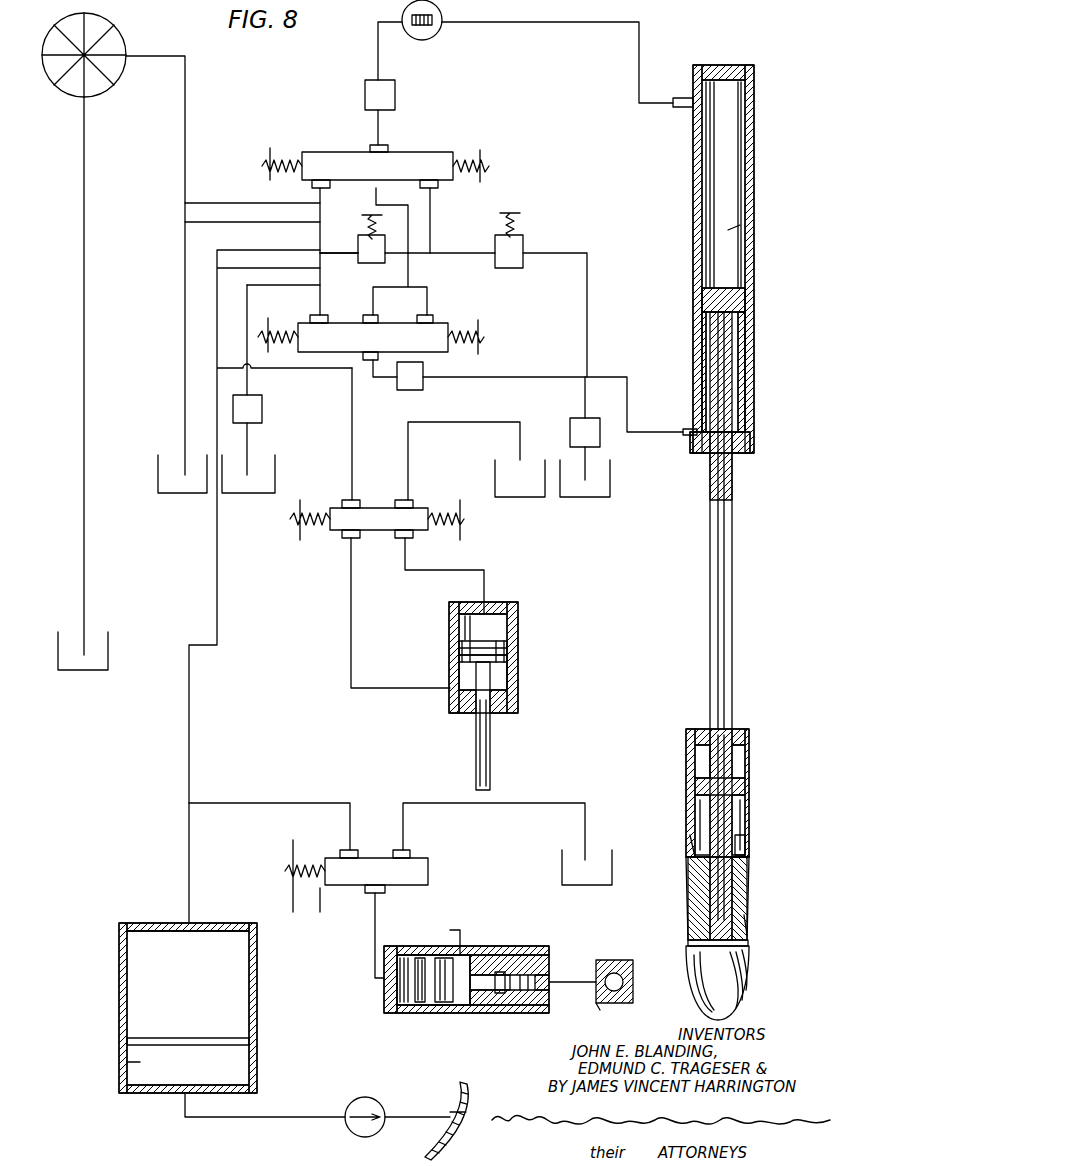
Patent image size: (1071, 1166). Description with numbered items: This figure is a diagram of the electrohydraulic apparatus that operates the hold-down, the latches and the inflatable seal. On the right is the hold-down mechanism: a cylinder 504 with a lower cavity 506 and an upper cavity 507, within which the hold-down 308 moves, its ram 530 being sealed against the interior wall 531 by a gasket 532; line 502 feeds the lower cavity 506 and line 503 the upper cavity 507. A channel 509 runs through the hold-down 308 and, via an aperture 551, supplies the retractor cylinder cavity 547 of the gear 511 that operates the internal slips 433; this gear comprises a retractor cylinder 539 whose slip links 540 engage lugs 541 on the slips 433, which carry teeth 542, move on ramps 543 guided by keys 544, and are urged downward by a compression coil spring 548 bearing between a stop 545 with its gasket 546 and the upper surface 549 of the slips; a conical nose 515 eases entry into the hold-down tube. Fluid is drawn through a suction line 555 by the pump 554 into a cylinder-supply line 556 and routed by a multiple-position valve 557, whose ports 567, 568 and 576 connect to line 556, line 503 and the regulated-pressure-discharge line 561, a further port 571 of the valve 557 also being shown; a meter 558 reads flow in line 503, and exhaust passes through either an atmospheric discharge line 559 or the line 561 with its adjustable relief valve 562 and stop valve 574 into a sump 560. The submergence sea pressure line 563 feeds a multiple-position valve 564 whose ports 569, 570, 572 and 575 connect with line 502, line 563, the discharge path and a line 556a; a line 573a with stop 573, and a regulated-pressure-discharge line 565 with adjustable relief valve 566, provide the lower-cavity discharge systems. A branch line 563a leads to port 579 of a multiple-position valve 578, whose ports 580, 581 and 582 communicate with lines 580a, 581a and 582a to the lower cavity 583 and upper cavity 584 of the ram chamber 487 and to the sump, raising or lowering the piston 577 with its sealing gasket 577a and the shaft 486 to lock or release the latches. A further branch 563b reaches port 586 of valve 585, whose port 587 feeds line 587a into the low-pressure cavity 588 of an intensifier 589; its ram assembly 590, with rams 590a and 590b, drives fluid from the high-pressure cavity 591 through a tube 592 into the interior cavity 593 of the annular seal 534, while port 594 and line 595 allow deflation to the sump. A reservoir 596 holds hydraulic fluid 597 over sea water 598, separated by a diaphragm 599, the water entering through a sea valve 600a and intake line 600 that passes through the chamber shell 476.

The pump 554 is at (124, 43).
The suction line 555 is at (84, 330).
The cylinder-supply line 556 is at (185, 185).
The line 556a is at (408, 272).
The multiple-position valve 557 is at (424, 160).
The meter 558 is at (438, 33).
The atmospheric discharge line 559 is at (185, 352).
The sump 560 is at (562, 863).
The regulated-pressure-discharge line 561 is at (430, 238).
The adjustable relief valve 562 is at (578, 418).
The submergence sea pressure line 563 is at (320, 268).
The line 563a is at (352, 403).
The line 563b is at (280, 803).
The multiple-position valve 564 is at (346, 323).
The regulated-pressure-discharge line 565 is at (255, 382).
The adjustable relief valve 566 is at (262, 414).
The port 567 is at (372, 182).
The port 568 is at (372, 148).
The port 569 is at (385, 355).
The port 570 is at (310, 318).
The port 571 is at (312, 186).
The port 572 is at (385, 320).
The stop 573 is at (358, 246).
The line 573a is at (341, 266).
The stop valve 574 is at (523, 246).
The port 575 is at (436, 319).
The port 576 is at (438, 188).
The ram or piston 577 is at (460, 645).
The peripheral sealing gasket 577a is at (459, 652).
The multiple-position valve 578 is at (376, 505).
The port 579 is at (345, 500).
The port 580 is at (348, 538).
The line 580a is at (351, 633).
The port 581 is at (410, 538).
The line 581a is at (484, 577).
The port 582 is at (410, 500).
The line 582a is at (472, 422).
The lower cavity 583 is at (500, 684).
The upper cavity 584 is at (500, 623).
The valve 585 is at (376, 856).
The port 586 is at (342, 850).
The port 587 is at (370, 893).
The line 587a is at (375, 918).
The low-pressure cavity 588 is at (410, 992).
The intensifier 589 is at (500, 946).
The ram assembly 590 is at (447, 1002).
The ram 590a is at (420, 1002).
The ram 590b is at (500, 992).
The high-pressure cavity 591 is at (527, 972).
The tube 592 is at (570, 982).
The interior cavity 593 is at (612, 960).
The port 594 is at (410, 852).
The line 595 is at (430, 803).
The reservoir 596 is at (119, 985).
The hydraulic fluid 597 is at (130, 946).
The sea water 598 is at (145, 1062).
The diaphragm 599 is at (188, 1038).
The intake line 600 is at (308, 1117).
The sea valve 600a is at (375, 1090).
The chamber shell 476 is at (456, 1090).
The shaft or ram extension 486 is at (490, 760).
The ram chamber or cylinder 487 is at (507, 651).
The hydraulic operating line 502 is at (656, 432).
The hydraulic operating line 503 is at (639, 45).
The cylinder 504 is at (754, 192).
The lower cavity 506 is at (745, 388).
The upper cavity 507 is at (735, 130).
The channel 509 is at (712, 352).
The gear 511 is at (755, 808).
The conical nose 515 is at (730, 985).
The ram 530 is at (702, 290).
The interior wall 531 is at (745, 222).
The gasket 532 is at (745, 298).
The inflatable annular seal 534 is at (597, 1000).
The retractor cylinder 539 is at (745, 760).
The slip links 540 is at (745, 848).
The lugs 541 is at (745, 860).
The teeth or serrations 542 is at (690, 873).
The ramps 543 is at (748, 943).
The keys or slides 544 is at (747, 918).
The stop 545 is at (740, 783).
The peripheral sealing gasket 546 is at (698, 788).
The retractor cylinder cavity 547 is at (700, 763).
The compression coil spring 548 is at (745, 828).
The upper surface 549 is at (693, 846).
The aperture 551 is at (712, 770).
The hold-down 308 is at (732, 582).
The internal slips 433 is at (745, 892).